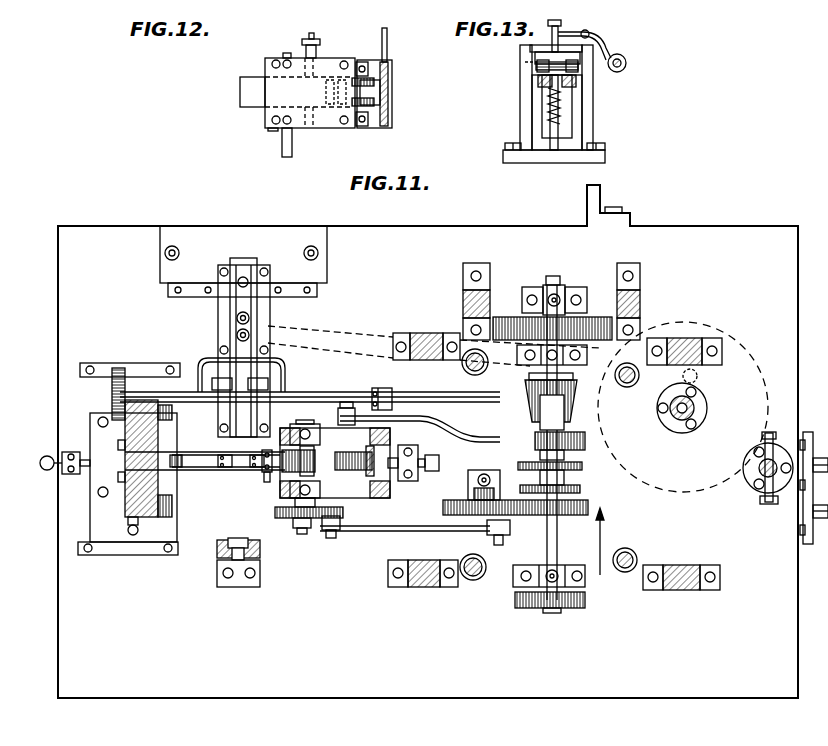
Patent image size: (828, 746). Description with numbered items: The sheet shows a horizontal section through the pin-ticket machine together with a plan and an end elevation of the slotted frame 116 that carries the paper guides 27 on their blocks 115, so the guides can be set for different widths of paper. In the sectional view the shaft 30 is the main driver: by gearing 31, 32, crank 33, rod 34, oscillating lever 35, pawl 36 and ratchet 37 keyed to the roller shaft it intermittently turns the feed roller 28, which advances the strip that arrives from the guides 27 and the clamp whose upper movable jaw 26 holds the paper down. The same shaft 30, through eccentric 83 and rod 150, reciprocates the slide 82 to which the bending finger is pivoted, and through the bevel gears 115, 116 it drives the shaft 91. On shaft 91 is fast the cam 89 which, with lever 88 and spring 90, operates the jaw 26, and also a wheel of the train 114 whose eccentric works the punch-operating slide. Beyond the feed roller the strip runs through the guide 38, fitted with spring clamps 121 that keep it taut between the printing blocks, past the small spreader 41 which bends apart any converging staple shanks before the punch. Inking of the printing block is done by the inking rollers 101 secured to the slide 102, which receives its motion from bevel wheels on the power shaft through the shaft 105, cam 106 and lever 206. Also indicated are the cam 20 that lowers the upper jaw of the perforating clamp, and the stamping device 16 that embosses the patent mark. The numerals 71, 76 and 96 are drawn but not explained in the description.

In FIG. 11, the stamping device 16 is at (757, 463).
In FIG. 11, the cam 20 is at (583, 466).
In FIG. 12, the upper movable jaw 26 is at (393, 99).
In FIG. 13, the upper movable jaw 26 is at (548, 45).
In FIG. 12, the guides 27 is at (366, 77).
In FIG. 13, the guides 27 is at (540, 85).
In FIG. 11, the guides 27 is at (354, 459).
In FIG. 11, the feed roller 28 is at (310, 455).
In FIG. 11, the shaft 30 is at (558, 416).
In FIG. 11, the gearing 31 is at (577, 515).
In FIG. 11, the gearing 32 is at (469, 485).
In FIG. 11, the crank 33 is at (500, 540).
In FIG. 11, the rod 34 is at (405, 520).
In FIG. 11, the oscillating lever 35 is at (340, 517).
In FIG. 11, the pawl 36 is at (268, 480).
In FIG. 11, the ratchet 37 is at (318, 505).
In FIG. 11, the paper guide 38 is at (202, 451).
In FIG. 11, the spreader 41 is at (176, 470).
In FIG. 11, the gear 71 is at (590, 494).
In FIG. 11, the gear 76 is at (581, 488).
In FIG. 12, the slide 82 is at (252, 92).
In FIG. 11, the eccentric 83 is at (586, 441).
In FIG. 12, the lever 88 is at (393, 44).
In FIG. 13, the lever 88 is at (606, 38).
In FIG. 13, the cam 89 is at (624, 57).
In FIG. 11, the cam 89 is at (382, 391).
In FIG. 13, the spring 90 is at (560, 98).
In FIG. 11, the spring 90 is at (380, 455).
In FIG. 13, the shaft 91 is at (622, 65).
In FIG. 11, the shaft 91 is at (318, 398).
In FIG. 11, the bearing block 96 is at (233, 540).
In FIG. 11, the inking rollers 101 is at (268, 385).
In FIG. 11, the slide 102 is at (243, 262).
In FIG. 11, the shaft 105 is at (693, 404).
In FIG. 11, the cam 106 is at (740, 353).
In FIG. 11, the train 114 is at (112, 392).
In FIG. 12, the bevel gear 115 is at (362, 63).
In FIG. 13, the bevel gear 115 is at (524, 63).
In FIG. 11, the bevel gear 115 is at (570, 378).
In FIG. 12, the bevel gear 116 is at (296, 132).
In FIG. 13, the bevel gear 116 is at (530, 48).
In FIG. 11, the bevel gear 116 is at (556, 404).
In FIG. 11, the spring clamps 121 is at (240, 485).
In FIG. 11, the rod 150 is at (419, 422).
In FIG. 11, the lever 206 is at (434, 346).